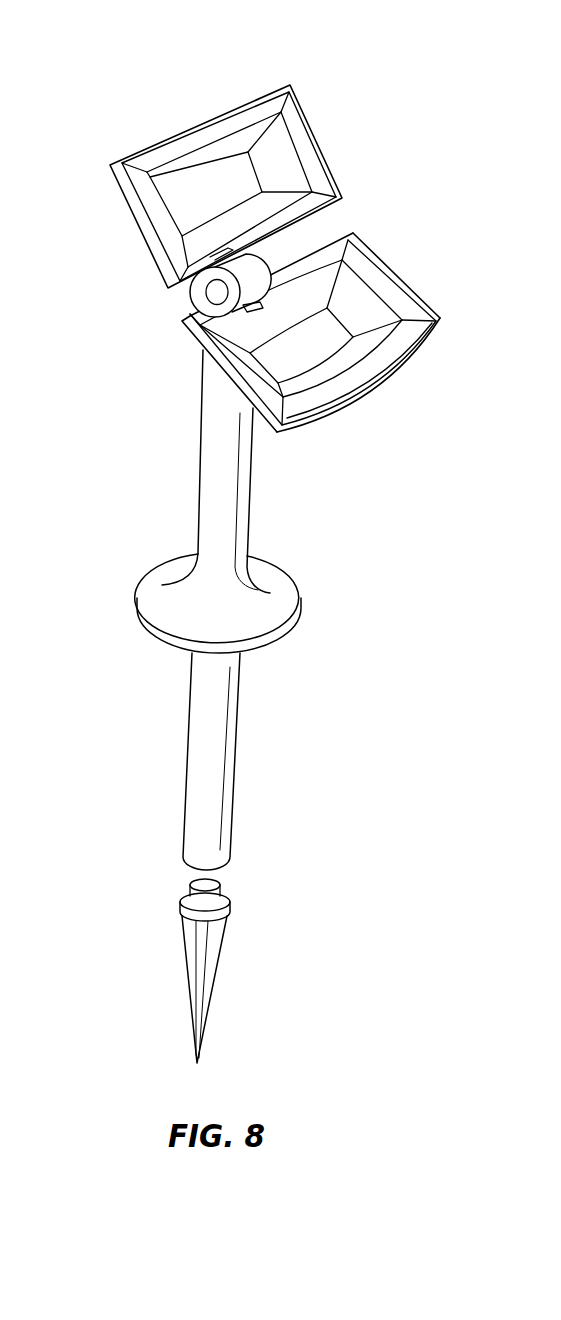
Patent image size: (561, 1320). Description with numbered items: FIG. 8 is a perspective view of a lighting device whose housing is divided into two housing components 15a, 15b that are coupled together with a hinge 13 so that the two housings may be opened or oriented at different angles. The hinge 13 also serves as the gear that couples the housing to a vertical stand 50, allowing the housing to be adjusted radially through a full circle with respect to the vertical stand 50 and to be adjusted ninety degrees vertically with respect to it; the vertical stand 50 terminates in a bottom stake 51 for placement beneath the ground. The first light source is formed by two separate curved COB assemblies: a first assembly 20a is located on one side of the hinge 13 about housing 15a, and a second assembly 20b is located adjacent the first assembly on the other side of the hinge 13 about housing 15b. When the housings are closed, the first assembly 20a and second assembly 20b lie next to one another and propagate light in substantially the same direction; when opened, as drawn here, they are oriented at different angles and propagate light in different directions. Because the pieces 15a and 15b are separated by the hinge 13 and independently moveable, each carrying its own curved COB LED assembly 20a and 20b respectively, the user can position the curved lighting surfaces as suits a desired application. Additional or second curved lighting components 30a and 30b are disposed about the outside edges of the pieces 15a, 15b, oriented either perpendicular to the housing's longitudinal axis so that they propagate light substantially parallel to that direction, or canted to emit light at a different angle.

The housing component 15a is at (172, 147).
The second curved lighting component 30a is at (240, 107).
The first assembly 20a is at (183, 203).
The hinge 13 is at (202, 300).
The housing component 15b is at (365, 375).
The second curved lighting component 30b is at (315, 417).
The second assembly 20b is at (323, 338).
The vertical stand 50 is at (233, 747).
The bottom stake 51 is at (220, 957).